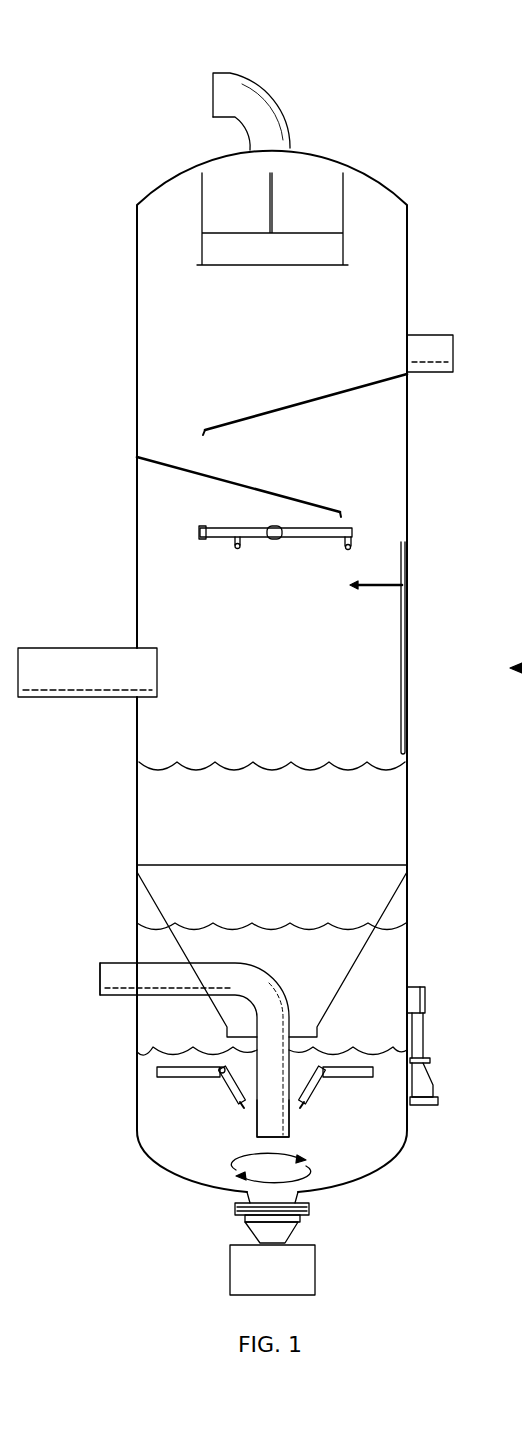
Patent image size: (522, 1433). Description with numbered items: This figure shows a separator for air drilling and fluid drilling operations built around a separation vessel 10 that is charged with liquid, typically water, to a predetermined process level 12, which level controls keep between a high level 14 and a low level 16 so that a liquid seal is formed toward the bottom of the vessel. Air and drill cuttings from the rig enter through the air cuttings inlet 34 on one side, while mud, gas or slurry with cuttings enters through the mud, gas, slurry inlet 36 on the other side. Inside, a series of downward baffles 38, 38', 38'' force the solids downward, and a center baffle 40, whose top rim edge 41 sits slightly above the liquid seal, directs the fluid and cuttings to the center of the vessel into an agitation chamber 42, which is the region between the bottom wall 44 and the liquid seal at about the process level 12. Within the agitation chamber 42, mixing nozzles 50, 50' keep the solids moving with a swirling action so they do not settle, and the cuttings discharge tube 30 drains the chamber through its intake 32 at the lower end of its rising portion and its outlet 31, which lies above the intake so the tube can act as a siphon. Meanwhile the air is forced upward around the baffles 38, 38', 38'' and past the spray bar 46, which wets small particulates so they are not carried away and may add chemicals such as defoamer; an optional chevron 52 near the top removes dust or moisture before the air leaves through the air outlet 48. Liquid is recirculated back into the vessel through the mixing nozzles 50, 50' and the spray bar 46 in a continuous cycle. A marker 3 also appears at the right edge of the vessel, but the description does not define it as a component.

The separation vessel 10 is at (128, 72).
The process level 12 is at (137, 917).
The high level 14 is at (139, 766).
The low level 16 is at (137, 1047).
The cuttings discharge tube 30 is at (200, 972).
The outlet 31 is at (98, 977).
The intake 32 is at (290, 1123).
The air cuttings inlet 34 is at (88, 645).
The mud, gas, slurry inlet 36 is at (455, 352).
The baffle 38 is at (377, 648).
The baffle 38' is at (305, 393).
The baffle 38'' is at (239, 480).
The center baffle 40 is at (397, 902).
The top rim edge 41 is at (342, 863).
The agitation chamber 42 is at (398, 957).
The bottom wall 44 is at (352, 1174).
The spray bar 46 is at (295, 538).
The air outlet 48 is at (283, 104).
The mixing nozzle 50 is at (201, 1097).
The mixing nozzle 50' is at (336, 1097).
The chevron 52 is at (347, 184).
The section view indicator 3 is at (516, 655).